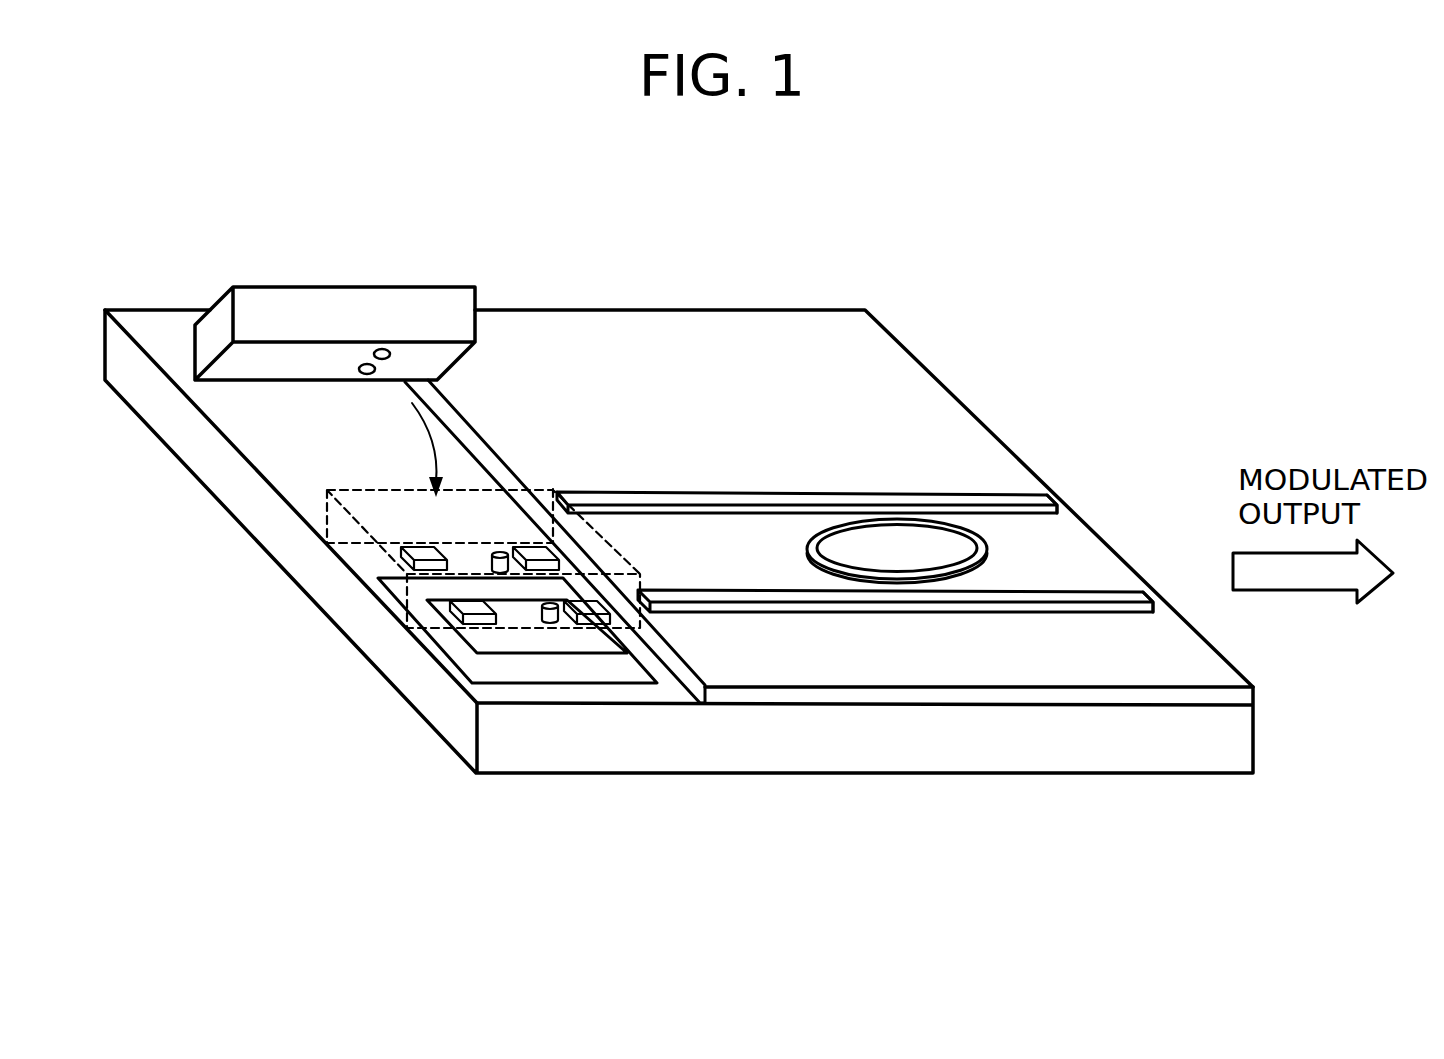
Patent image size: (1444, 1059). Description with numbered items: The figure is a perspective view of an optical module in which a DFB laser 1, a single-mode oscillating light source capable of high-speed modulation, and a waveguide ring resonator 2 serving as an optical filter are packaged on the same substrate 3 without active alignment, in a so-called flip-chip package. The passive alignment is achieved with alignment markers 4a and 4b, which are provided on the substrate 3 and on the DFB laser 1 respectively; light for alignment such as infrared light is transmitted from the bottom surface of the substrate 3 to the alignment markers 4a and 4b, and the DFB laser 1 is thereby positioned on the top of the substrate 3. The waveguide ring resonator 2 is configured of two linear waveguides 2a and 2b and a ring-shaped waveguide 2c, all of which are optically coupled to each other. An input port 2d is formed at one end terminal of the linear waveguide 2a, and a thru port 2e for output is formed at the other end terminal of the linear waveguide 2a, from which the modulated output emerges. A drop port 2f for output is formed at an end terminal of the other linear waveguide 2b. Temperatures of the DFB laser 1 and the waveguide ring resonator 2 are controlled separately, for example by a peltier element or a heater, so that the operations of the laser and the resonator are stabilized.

The DFB laser 1 is at (311, 300).
The waveguide ring resonator 2 is at (880, 386).
The linear waveguide 2a is at (793, 595).
The linear waveguide 2b is at (740, 506).
The ring-shaped waveguide 2c is at (917, 538).
The input port 2d is at (590, 558).
The thru port 2e is at (1150, 599).
The drop port 2f is at (1060, 503).
The substrate 3 is at (698, 757).
The alignment marker 4a is at (520, 672).
The alignment marker 4b is at (382, 347).